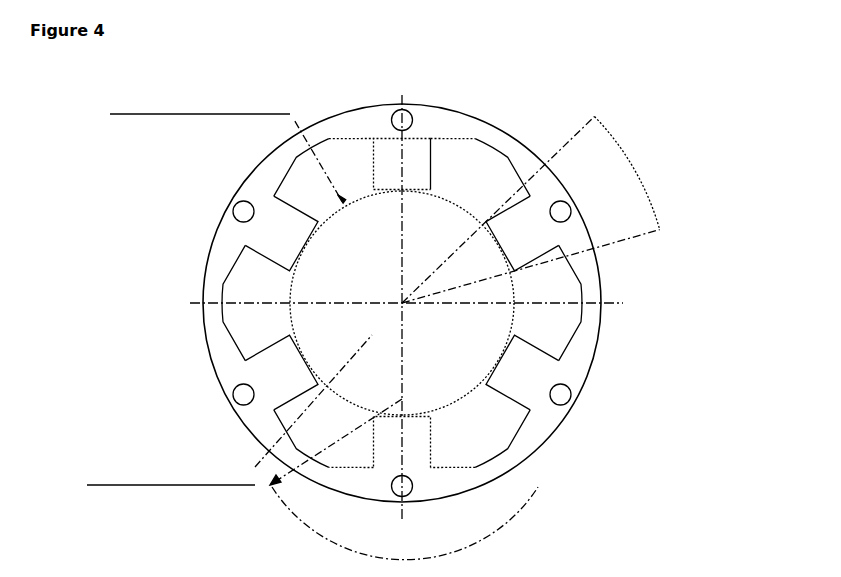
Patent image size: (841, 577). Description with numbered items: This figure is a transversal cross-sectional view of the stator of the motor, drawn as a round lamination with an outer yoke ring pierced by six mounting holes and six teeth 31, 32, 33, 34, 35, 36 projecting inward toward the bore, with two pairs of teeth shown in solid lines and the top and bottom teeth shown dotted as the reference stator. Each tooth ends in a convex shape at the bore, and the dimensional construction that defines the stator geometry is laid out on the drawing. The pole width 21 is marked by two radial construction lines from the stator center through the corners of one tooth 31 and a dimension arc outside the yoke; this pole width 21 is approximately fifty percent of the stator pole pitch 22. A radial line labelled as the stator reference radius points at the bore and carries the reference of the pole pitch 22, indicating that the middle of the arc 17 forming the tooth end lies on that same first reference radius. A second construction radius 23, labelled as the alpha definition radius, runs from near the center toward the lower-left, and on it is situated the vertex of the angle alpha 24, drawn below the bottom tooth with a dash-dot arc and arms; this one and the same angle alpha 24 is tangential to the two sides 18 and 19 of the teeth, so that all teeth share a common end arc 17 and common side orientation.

The arc forming the tooth end 17 is at (500, 359).
The tooth side 18 is at (513, 328).
The tooth side 19 is at (495, 405).
The pole width 21 is at (651, 189).
The stator pole pitch / radius R1 22 is at (342, 208).
The radius R2 23 is at (245, 405).
The angle alpha 24 is at (385, 551).
The stator tooth 31 is at (522, 238).
The stator tooth 32 is at (530, 377).
The stator tooth 33 is at (322, 355).
The stator tooth 34 is at (290, 372).
The stator tooth 35 is at (290, 238).
The stator tooth 36 is at (413, 170).